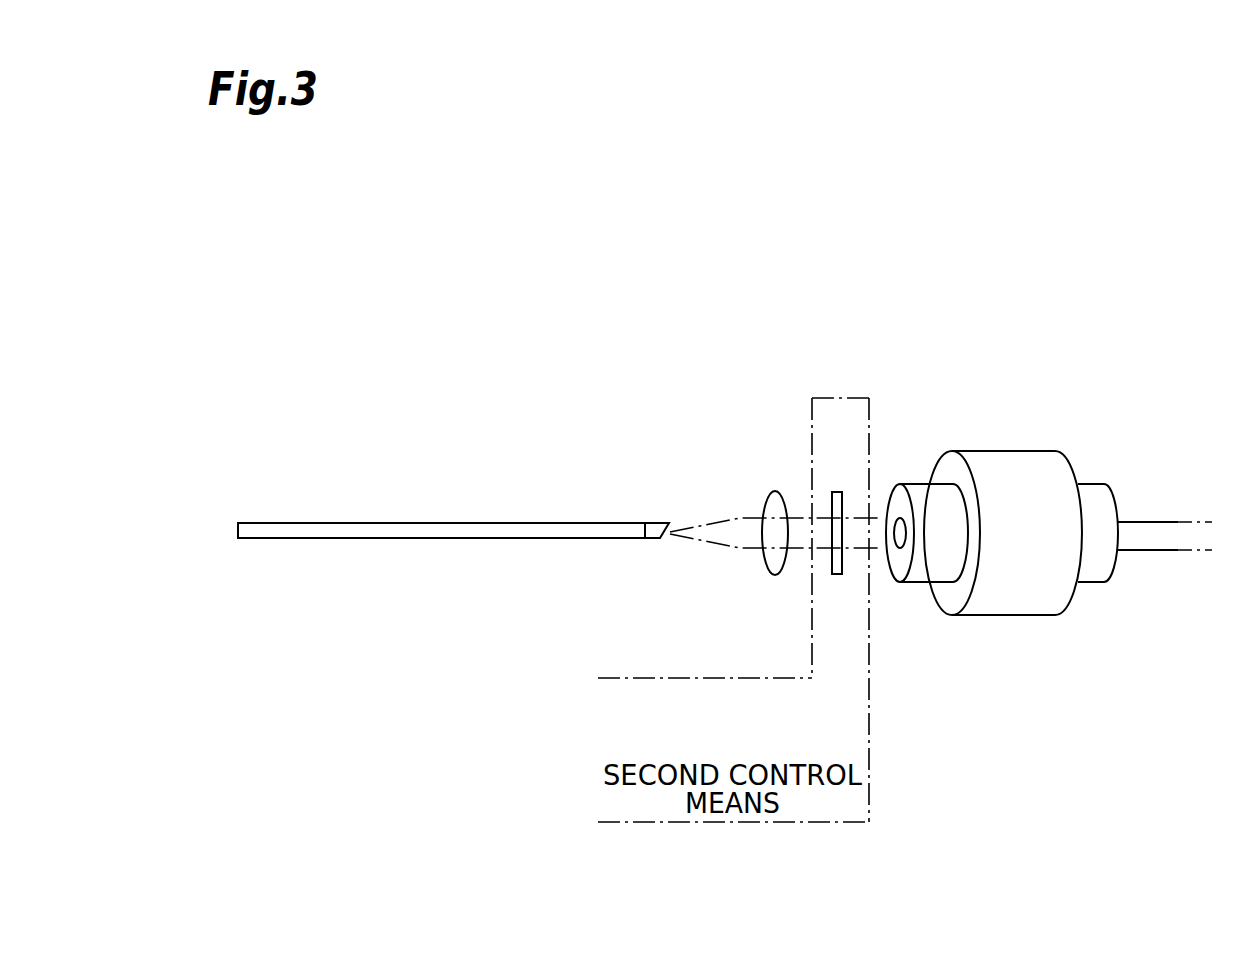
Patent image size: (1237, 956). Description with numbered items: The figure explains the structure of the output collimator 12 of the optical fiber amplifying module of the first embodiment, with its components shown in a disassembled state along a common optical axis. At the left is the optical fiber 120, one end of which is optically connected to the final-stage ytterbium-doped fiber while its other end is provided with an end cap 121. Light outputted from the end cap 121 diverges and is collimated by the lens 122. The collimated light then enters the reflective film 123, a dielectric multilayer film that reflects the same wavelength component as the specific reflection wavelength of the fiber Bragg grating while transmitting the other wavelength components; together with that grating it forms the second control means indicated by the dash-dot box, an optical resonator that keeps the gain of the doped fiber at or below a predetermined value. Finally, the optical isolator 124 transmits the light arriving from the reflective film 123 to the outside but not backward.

The output collimator 12 is at (1103, 279).
The optical fiber 120 is at (458, 522).
The end cap 121 is at (658, 522).
The lens 122 is at (777, 491).
The reflective film 123 is at (838, 491).
The optical isolator 124 is at (1010, 450).